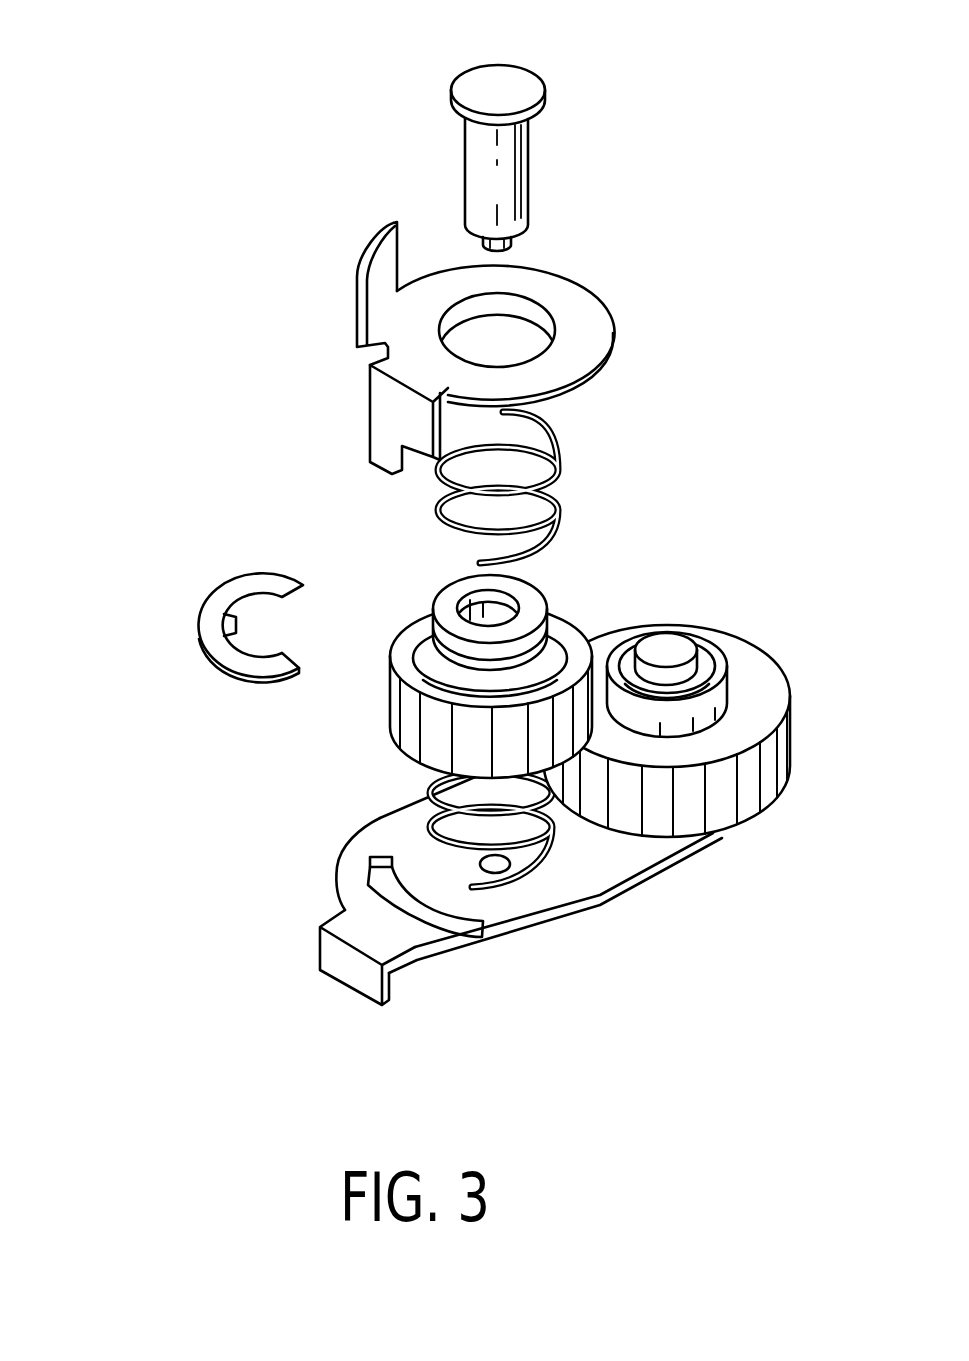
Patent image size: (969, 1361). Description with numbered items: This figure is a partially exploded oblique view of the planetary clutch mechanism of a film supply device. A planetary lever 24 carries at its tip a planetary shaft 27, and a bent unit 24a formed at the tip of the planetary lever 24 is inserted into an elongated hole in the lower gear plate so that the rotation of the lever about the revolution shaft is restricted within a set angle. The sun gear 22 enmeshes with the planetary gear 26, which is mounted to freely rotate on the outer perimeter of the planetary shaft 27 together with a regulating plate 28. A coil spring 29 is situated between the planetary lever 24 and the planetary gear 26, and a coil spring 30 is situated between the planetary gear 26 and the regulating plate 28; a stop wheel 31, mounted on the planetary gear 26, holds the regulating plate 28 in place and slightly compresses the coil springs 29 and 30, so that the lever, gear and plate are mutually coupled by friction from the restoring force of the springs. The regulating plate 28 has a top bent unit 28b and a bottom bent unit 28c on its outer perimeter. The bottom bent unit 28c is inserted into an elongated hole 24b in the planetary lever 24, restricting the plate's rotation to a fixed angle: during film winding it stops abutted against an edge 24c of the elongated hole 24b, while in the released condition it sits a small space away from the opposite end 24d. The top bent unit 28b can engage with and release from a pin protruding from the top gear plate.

The sun gear 22 is at (757, 670).
The planetary lever 24 is at (580, 893).
The bent unit 24a is at (348, 960).
The elongated hole 24b is at (377, 885).
The edge of elongated hole 24c is at (378, 857).
The end of elongated hole 24d is at (495, 950).
The planetary gear 26 is at (415, 728).
The planetary shaft 27 is at (480, 83).
The regulating plate 28 is at (577, 297).
The top bent unit 28b is at (372, 248).
The bottom bent unit 28c is at (377, 457).
The coil spring 29 is at (536, 880).
The coil spring 30 is at (552, 440).
The stop wheel 31 is at (215, 622).